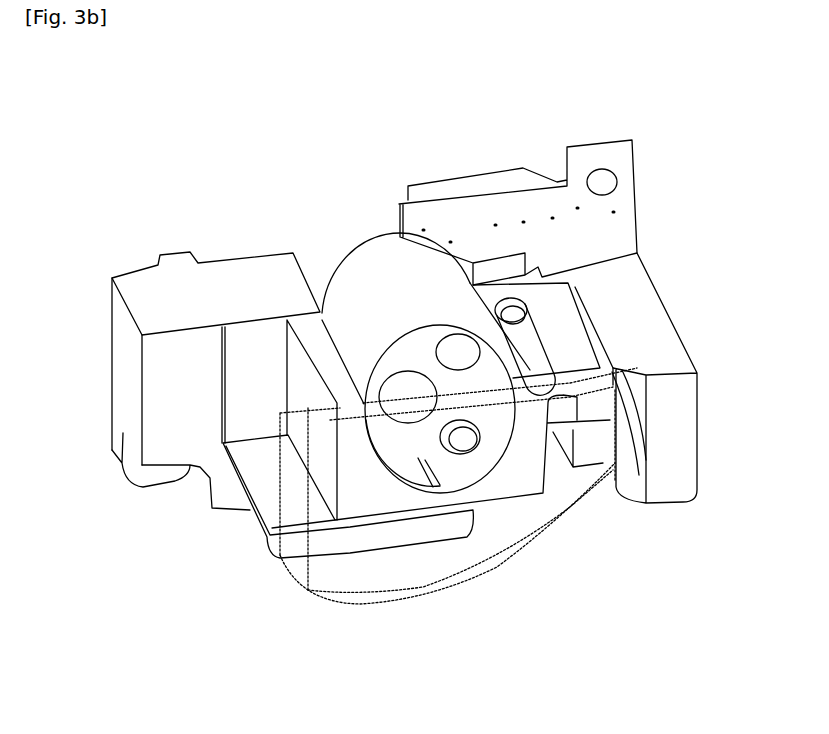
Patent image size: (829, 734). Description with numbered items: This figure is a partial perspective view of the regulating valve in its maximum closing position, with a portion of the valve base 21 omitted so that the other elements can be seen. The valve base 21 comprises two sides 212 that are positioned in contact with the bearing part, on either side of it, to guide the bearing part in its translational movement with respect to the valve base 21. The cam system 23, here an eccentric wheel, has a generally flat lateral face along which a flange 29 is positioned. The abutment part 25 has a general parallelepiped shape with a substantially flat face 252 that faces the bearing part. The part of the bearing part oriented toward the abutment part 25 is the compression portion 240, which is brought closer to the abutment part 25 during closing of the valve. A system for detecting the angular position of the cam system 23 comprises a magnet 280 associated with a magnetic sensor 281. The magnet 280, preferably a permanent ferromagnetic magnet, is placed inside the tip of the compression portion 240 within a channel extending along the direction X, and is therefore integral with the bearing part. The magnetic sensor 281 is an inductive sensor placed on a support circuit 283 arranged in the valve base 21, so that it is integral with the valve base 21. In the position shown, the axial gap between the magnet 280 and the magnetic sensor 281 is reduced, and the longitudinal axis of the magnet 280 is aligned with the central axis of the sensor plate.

The valve base 21 is at (198, 445).
The sides 212 is at (267, 542).
The cam system 23 is at (432, 447).
The abutment part 25 is at (678, 447).
The flange 29 is at (435, 598).
The compression portion 240 is at (570, 388).
The flat face 252 is at (598, 405).
The magnet 280 is at (495, 305).
The magnetic sensor 281 is at (495, 274).
The support circuit 283 is at (532, 207).